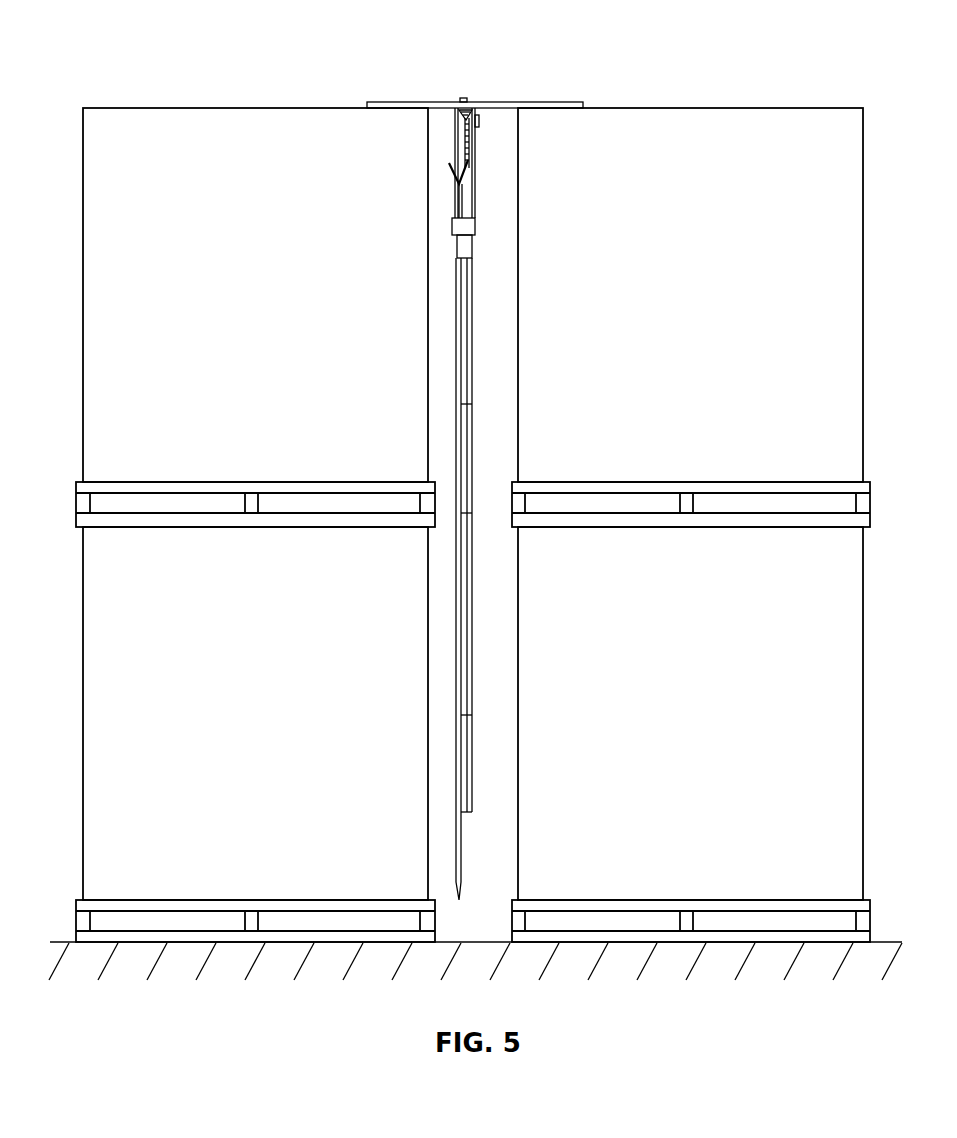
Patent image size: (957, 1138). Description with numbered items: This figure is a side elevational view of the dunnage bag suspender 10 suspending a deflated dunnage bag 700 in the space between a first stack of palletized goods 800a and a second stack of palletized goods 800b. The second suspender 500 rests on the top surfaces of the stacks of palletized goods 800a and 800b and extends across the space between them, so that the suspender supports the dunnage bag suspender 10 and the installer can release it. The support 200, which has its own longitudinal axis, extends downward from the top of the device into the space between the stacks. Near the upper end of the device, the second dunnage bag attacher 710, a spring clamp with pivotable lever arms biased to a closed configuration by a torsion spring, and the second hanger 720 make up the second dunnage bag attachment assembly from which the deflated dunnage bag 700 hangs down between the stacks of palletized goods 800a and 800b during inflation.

The dunnage bag suspender 10 is at (481, 473).
The support 200 is at (477, 138).
The second suspender 500 is at (407, 102).
The dunnage bag 700 is at (460, 865).
The second dunnage bag attacher 710 is at (446, 180).
The second hanger 720 is at (470, 135).
The first stack of palletized goods 800a is at (125, 72).
The second stack of palletized goods 800b is at (762, 74).